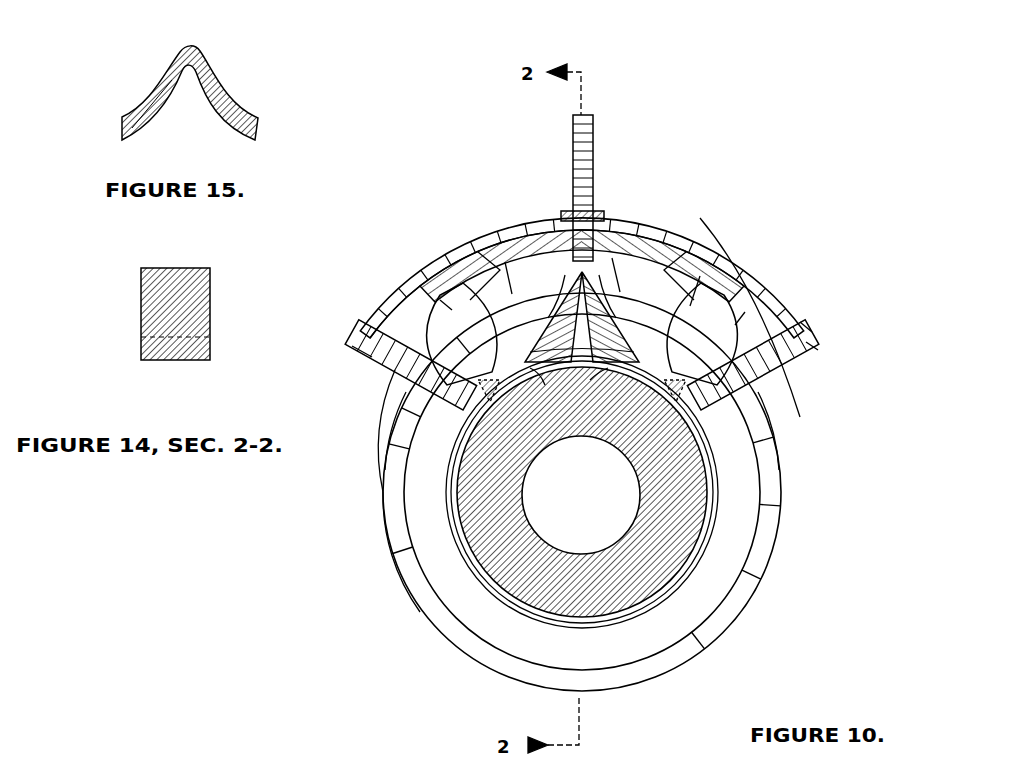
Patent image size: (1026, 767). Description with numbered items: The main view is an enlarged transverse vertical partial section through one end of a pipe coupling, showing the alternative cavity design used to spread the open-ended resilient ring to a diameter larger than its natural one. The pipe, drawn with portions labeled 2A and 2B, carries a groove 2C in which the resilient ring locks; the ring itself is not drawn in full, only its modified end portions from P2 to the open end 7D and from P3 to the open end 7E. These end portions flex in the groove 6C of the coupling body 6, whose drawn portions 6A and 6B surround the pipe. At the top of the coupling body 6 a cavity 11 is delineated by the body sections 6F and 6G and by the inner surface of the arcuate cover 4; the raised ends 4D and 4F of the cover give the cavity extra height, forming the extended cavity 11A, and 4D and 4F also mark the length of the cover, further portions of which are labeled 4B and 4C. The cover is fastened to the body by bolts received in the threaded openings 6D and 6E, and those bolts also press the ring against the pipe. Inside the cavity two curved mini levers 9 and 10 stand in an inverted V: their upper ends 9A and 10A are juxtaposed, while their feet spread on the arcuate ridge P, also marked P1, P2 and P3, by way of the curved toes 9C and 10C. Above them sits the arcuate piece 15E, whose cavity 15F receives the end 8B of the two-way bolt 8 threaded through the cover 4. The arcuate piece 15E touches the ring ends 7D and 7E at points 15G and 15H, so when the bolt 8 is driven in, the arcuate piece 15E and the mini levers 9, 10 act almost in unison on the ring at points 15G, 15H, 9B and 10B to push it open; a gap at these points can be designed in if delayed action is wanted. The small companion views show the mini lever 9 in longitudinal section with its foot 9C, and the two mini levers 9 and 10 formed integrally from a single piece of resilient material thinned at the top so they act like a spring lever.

In FIG. 10, the pipe wall 2A is at (713, 500).
In FIG. 10, the pipe bore 2B is at (576, 553).
In FIG. 10, the groove 2C is at (705, 520).
In FIG. 10, the arcuate cover 4 is at (773, 320).
In FIG. 10, the clamp arm end 4B is at (388, 345).
In FIG. 10, the clamp arm outer surface 4C is at (797, 330).
In FIG. 10, the raised end of cover 4D is at (360, 347).
In FIG. 10, the raised end of cover 4F is at (813, 347).
In FIG. 10, the coupling body 6 is at (765, 535).
In FIG. 10, the housing outer wall 6A is at (717, 630).
In FIG. 10, the housing inner wall 6B is at (707, 548).
In FIG. 10, the groove 6C is at (393, 548).
In FIG. 10, the threaded opening 6D is at (412, 390).
In FIG. 10, the threaded opening 6E is at (747, 406).
In FIG. 10, the section of coupling body 6F is at (350, 400).
In FIG. 10, the section of coupling body 6G is at (745, 312).
In FIG. 10, the open end of resilient ring 7D is at (478, 252).
In FIG. 10, the open end of resilient ring 7E is at (732, 262).
In FIG. 10, the two way bolt 8 is at (571, 190).
In FIG. 10, the bolt end 8B is at (596, 125).
In FIG. 15, the mini lever 9 is at (138, 120).
In FIG. 14, the mini lever 9 is at (141, 311).
In FIG. 10, the mini lever 9 is at (540, 345).
In FIG. 10, the end of mini lever 9A is at (562, 278).
In FIG. 10, the contact point of mini lever 9B is at (487, 347).
In FIG. 14, the curved toe 9C is at (158, 360).
In FIG. 10, the curved toe 9C is at (545, 385).
In FIG. 15, the mini lever 10 is at (240, 120).
In FIG. 10, the mini lever 10 is at (628, 342).
In FIG. 10, the end of mini lever 10A is at (600, 278).
In FIG. 10, the contact point of mini lever 10B is at (677, 340).
In FIG. 10, the curved toe 10C is at (590, 380).
In FIG. 10, the cavity 11 is at (762, 292).
In FIG. 10, the extended cavity 11A is at (422, 290).
In FIG. 10, the arcuate piece 15E is at (545, 262).
In FIG. 10, the cavity in arcuate piece 15F is at (658, 292).
In FIG. 10, the contact point 15G is at (505, 262).
In FIG. 10, the contact point 15H is at (662, 290).
In FIG. 10, the arcuate ridge P is at (585, 352).
In FIG. 10, the arcuate ridge marking P1 is at (440, 300).
In FIG. 10, the arcuate ridge marking P2 is at (488, 395).
In FIG. 10, the arcuate ridge marking P3 is at (680, 398).